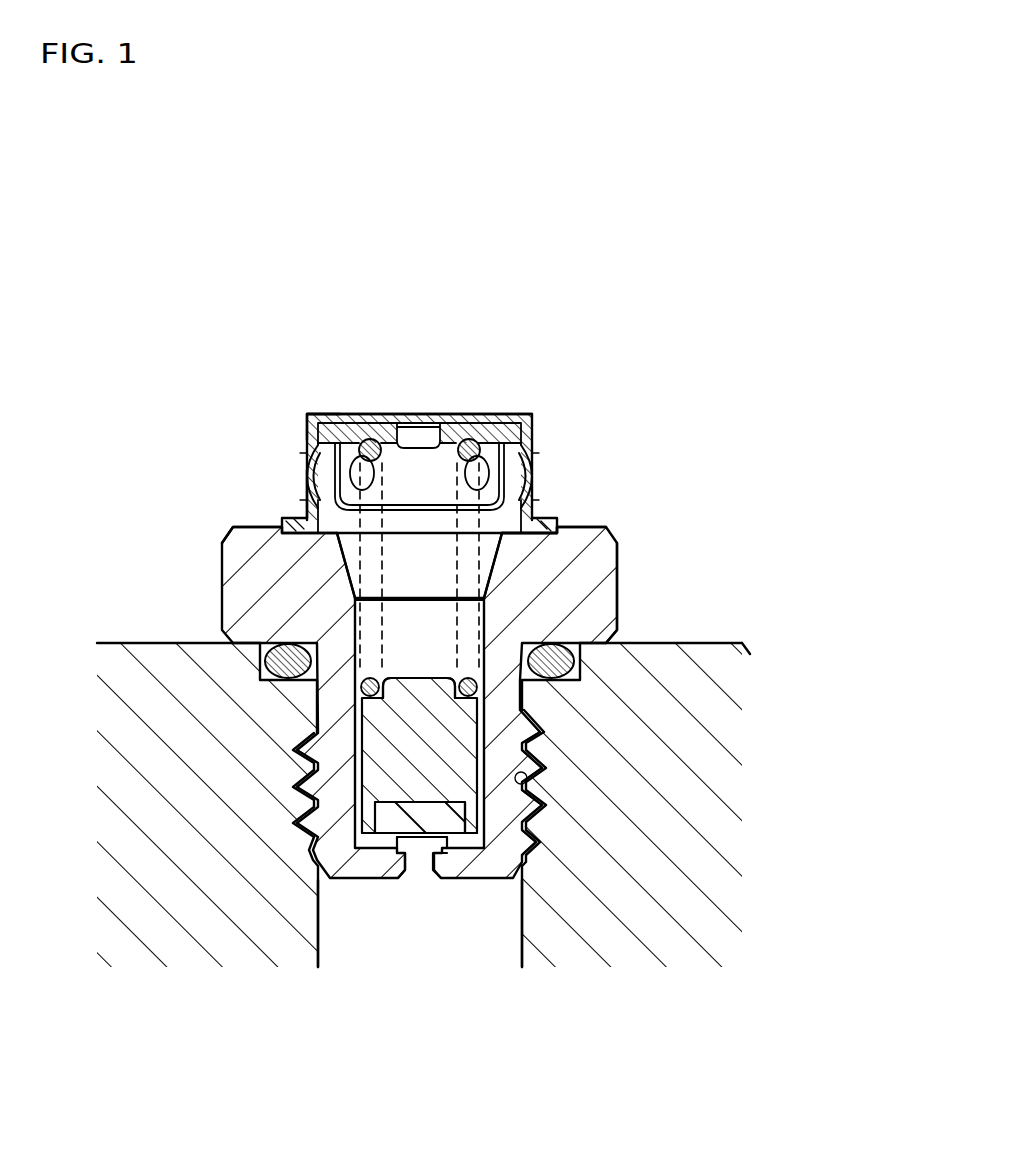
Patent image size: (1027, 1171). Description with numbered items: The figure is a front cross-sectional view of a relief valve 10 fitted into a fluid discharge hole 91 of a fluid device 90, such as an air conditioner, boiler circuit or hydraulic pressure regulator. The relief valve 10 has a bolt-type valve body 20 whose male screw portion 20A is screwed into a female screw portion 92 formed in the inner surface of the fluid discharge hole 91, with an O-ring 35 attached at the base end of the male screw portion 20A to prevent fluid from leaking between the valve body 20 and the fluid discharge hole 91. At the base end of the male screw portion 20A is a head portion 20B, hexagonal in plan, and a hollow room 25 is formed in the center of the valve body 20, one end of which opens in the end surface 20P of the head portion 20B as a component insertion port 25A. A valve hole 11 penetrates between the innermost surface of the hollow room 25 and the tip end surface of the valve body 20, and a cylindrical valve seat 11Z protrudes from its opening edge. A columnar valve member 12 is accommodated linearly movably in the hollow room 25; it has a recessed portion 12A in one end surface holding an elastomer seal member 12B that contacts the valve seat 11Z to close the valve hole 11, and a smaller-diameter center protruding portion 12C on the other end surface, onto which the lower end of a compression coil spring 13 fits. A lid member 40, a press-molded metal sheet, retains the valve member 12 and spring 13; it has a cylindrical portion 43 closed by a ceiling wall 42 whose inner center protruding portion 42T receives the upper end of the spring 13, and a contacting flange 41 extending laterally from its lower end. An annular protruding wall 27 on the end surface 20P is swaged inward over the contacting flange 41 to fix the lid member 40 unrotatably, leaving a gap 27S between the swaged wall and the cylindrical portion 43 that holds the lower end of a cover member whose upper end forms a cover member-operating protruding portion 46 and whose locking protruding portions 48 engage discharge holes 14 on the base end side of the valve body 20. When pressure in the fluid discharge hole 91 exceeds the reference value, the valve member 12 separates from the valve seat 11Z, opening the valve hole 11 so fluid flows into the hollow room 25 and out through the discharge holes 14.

The relief valve 10 is at (646, 504).
The valve hole 11 is at (418, 863).
The valve seat 11Z is at (391, 850).
The valve member 12 is at (390, 762).
The recessed portion 12A is at (393, 813).
The seal member 12B is at (380, 832).
The center protruding portion 12C is at (415, 687).
The compression coil spring 13 is at (355, 600).
The discharge holes 14 is at (388, 440).
The valve body 20 is at (603, 559).
The male screw portion 20A is at (525, 735).
The head portion 20B is at (583, 590).
The end surface 20P is at (497, 505).
The hollow room 25 is at (425, 563).
The component insertion port 25A is at (490, 548).
The annular protruding wall 27 is at (275, 520).
The gap 27S is at (302, 497).
The O-ring 35 is at (262, 661).
The lid member 40 is at (474, 418).
The contacting flange 41 is at (270, 541).
The ceiling wall 42 is at (493, 432).
The center protruding portion 42T is at (418, 445).
The cylindrical portion 43 is at (336, 440).
The cover member-operating protruding portion 46 is at (310, 420).
The locking protruding portions 48 is at (515, 468).
The fluid device 90 is at (742, 640).
The fluid discharge hole 91 is at (494, 957).
The female screw portion 92 is at (528, 790).